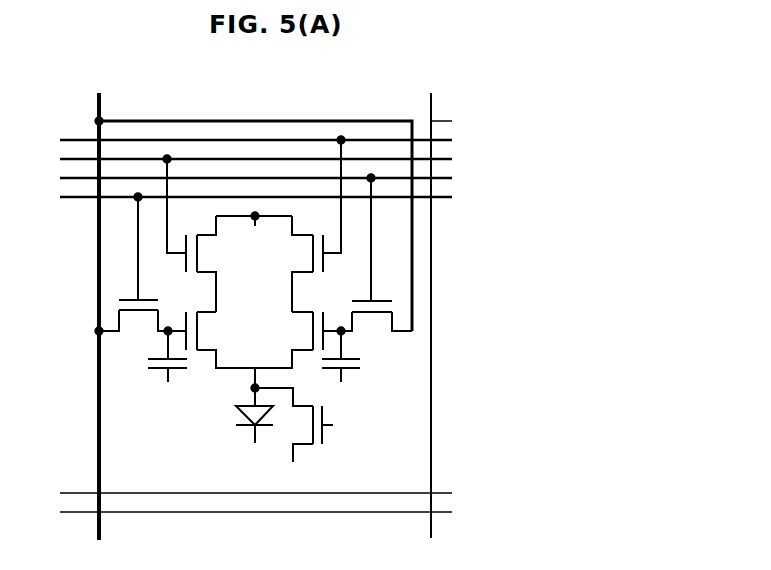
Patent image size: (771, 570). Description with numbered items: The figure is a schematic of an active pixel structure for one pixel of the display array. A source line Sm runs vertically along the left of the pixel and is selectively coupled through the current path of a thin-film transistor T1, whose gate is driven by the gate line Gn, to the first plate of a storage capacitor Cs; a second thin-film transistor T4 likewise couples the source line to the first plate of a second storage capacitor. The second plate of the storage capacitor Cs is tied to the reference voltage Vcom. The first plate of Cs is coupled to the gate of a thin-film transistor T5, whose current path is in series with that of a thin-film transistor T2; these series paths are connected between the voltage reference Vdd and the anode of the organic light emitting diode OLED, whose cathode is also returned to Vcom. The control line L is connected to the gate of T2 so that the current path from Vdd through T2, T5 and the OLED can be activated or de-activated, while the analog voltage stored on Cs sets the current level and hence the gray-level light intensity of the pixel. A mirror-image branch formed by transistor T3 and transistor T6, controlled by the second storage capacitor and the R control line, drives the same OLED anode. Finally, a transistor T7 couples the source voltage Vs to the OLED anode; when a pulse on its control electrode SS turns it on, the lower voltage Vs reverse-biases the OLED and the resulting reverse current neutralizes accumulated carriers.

The source line Sm is at (253, 316).
The control line L is at (245, 160).
The gate line Gn is at (244, 200).
The thin-film transistor T1 is at (140, 264).
The thin film transistor T2 is at (189, 233).
The thin film transistor T3 is at (318, 224).
The thin-film transistor T4 is at (374, 256).
The thin-film transistor T5 is at (220, 340).
The thin-film transistor T6 is at (298, 340).
The transistor T7 is at (294, 425).
The storage capacitor Cs is at (152, 356).
The voltage reference Vdd is at (254, 234).
The reference voltage Vcom is at (261, 423).
The source voltage Vs is at (294, 483).
The control electrode SS is at (351, 427).
The organic light emitting diode device OLED is at (234, 405).